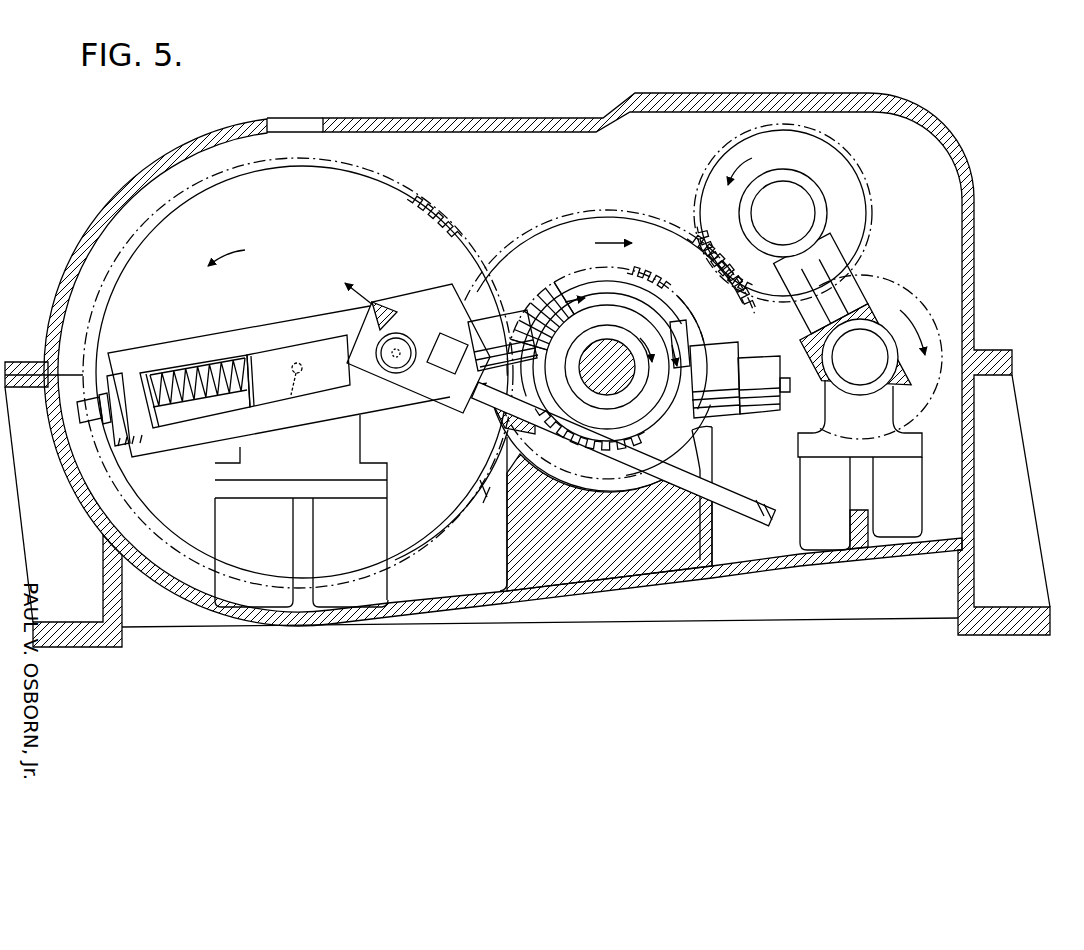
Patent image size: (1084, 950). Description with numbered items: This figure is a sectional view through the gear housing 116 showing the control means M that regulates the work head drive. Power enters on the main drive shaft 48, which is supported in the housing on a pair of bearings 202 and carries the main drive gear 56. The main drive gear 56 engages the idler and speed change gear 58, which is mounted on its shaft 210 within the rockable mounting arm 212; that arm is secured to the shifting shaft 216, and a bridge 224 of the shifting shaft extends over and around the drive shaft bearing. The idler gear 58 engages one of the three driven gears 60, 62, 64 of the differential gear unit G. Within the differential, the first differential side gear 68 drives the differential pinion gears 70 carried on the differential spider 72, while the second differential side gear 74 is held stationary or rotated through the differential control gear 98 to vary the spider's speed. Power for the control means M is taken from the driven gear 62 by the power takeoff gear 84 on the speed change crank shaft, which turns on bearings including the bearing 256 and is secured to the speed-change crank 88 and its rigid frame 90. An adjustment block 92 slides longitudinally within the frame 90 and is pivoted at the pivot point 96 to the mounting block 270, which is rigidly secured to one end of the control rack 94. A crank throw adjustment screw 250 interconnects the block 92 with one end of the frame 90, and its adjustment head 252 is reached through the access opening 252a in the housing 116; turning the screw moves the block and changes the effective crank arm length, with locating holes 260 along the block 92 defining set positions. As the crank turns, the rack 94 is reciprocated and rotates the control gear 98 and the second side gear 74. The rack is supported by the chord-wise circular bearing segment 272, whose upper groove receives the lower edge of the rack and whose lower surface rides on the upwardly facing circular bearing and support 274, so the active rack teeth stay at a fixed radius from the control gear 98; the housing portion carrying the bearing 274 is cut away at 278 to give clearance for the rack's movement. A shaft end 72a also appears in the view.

The gear housing 116 is at (432, 118).
The access opening 252a is at (290, 120).
The power takeoff gear 84 is at (375, 195).
The control mechanism M is at (276, 285).
The bearing 256 is at (362, 447).
The cut-away 278 is at (488, 472).
The speed-change crank 88 is at (170, 339).
The rigid frame 90 is at (215, 340).
The crank throw adjustment screw 250 is at (160, 383).
The locating holes 260 is at (323, 379).
The adjustment head 252 is at (87, 412).
The adjustment block 92 is at (322, 330).
The mounting block 270 is at (461, 418).
The pivot point 96 is at (398, 345).
The differential pinion gears 70 is at (530, 325).
The shaft end 72a is at (800, 399).
The differential gear unit G is at (610, 327).
The driven gear 64 is at (527, 252).
The driven gear 62 is at (668, 305).
The driven gear 60 is at (680, 314).
The second differential side gear 74 is at (684, 334).
The first differential side gear 68 is at (556, 320).
The differential spider 72 is at (600, 352).
The differential control gear 98 is at (652, 411).
The chord-wise circular bearing segment 272 is at (602, 497).
The circular bearing and support 274 is at (700, 447).
The shifting shaft 216 is at (700, 510).
The control rack 94 is at (748, 520).
The idler and speed change gear 58 is at (835, 162).
The shaft 210 is at (790, 192).
The rockable mounting arm 212 is at (829, 246).
The bridge 224 is at (880, 312).
The main drive shaft 48 is at (858, 382).
The main drive gear 56 is at (934, 330).
The bearings 202 is at (890, 420).